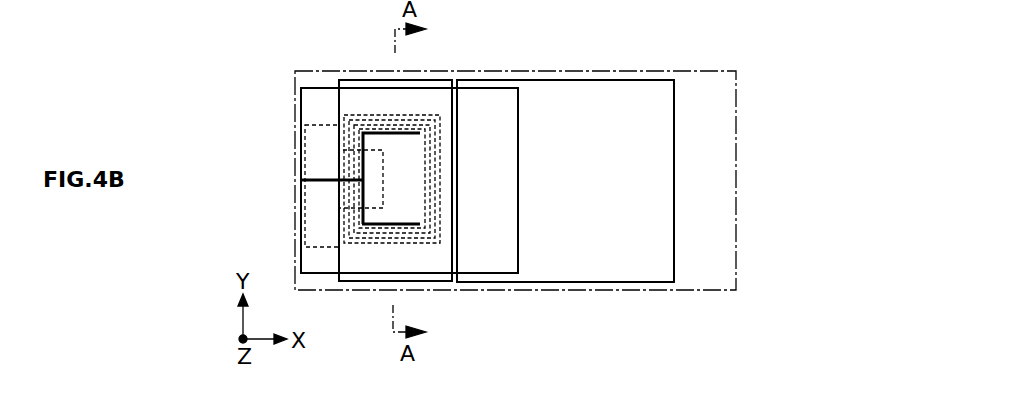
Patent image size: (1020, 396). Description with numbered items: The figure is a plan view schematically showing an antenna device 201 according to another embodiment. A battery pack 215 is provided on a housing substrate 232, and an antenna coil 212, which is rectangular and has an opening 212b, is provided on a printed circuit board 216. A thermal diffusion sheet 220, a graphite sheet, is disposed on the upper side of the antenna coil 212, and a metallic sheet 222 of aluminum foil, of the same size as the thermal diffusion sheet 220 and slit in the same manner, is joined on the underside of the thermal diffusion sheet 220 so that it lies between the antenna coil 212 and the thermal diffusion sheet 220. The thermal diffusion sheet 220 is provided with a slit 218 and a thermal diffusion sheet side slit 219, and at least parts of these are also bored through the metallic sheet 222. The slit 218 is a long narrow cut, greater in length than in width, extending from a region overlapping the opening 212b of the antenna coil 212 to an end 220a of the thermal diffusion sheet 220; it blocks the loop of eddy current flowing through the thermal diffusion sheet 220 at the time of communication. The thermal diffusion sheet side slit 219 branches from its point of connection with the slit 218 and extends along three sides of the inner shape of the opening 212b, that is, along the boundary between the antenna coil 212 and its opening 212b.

The antenna device 201 is at (697, 49).
The housing substrate 232 is at (737, 130).
The thermal diffusion sheet 220 is at (317, 98).
The end of the thermal diffusion sheet 220a is at (302, 138).
The printed circuit board 216 is at (440, 84).
The battery pack 215 is at (633, 100).
The metallic sheet 222 is at (380, 245).
The antenna coil 212 is at (373, 118).
The opening of the antenna coil 212b is at (398, 138).
The thermal diffusion sheet side slit 219 is at (395, 222).
The slit 218 is at (326, 178).